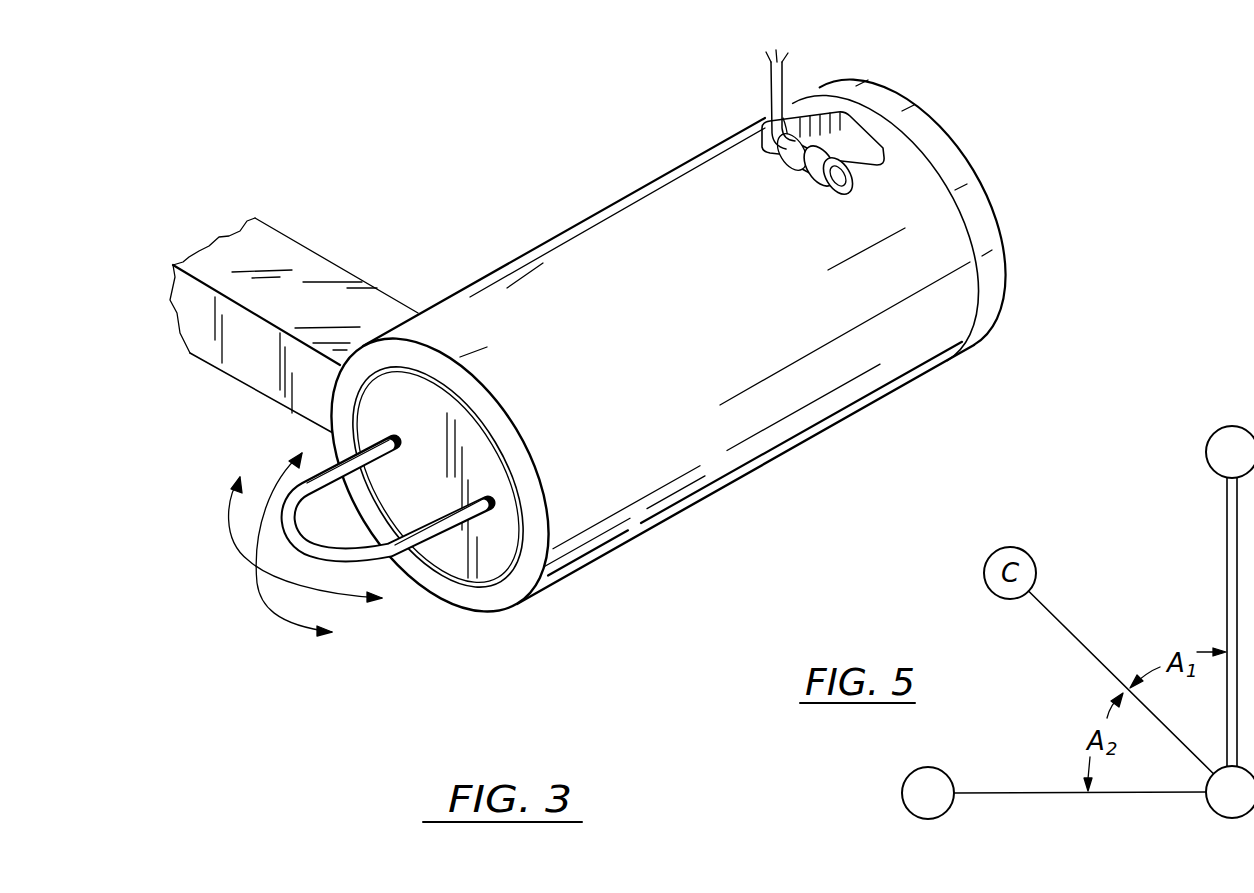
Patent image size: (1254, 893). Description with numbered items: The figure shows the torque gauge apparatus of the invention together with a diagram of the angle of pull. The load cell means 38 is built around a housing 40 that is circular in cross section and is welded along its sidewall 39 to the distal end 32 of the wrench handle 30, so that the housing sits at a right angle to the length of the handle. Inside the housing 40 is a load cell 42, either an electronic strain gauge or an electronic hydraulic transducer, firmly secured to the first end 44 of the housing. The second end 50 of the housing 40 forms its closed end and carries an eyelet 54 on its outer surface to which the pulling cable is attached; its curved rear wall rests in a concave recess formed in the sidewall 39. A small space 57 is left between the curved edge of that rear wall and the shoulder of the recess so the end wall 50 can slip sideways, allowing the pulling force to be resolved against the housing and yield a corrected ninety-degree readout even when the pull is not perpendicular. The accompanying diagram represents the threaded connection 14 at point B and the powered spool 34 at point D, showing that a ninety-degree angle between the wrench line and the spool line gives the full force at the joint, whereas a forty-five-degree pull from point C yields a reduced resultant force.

In FIG. 3, the handle portion 30 is at (236, 216).
In FIG. 3, the distal end of handle 32 is at (332, 303).
In FIG. 3, the load cell means 38 is at (426, 262).
In FIG. 3, the sidewall of housing 39 is at (658, 200).
In FIG. 3, the housing 40 is at (553, 283).
In FIG. 3, the load cell 42 is at (806, 140).
In FIG. 3, the first end of housing 44 is at (940, 147).
In FIG. 3, the second end of housing 50 is at (492, 546).
In FIG. 3, the eyelet 54 is at (368, 553).
In FIG. 3, the small space 57 is at (491, 590).
In FIG. 5, the threaded connection 14 is at (1206, 441).
In FIG. 5, the powered spool 34 is at (931, 767).